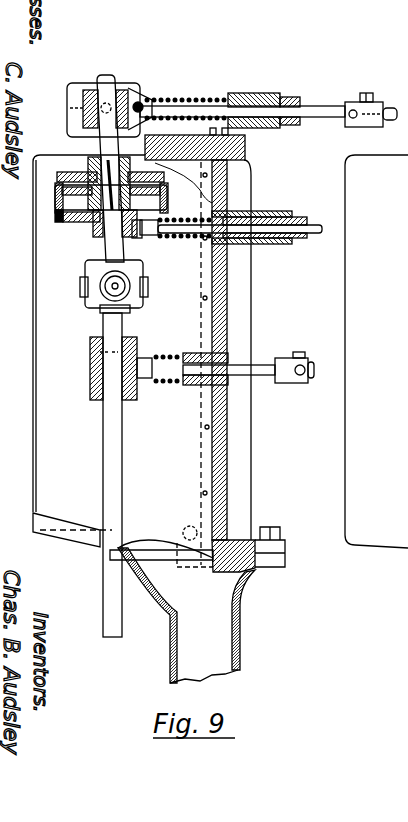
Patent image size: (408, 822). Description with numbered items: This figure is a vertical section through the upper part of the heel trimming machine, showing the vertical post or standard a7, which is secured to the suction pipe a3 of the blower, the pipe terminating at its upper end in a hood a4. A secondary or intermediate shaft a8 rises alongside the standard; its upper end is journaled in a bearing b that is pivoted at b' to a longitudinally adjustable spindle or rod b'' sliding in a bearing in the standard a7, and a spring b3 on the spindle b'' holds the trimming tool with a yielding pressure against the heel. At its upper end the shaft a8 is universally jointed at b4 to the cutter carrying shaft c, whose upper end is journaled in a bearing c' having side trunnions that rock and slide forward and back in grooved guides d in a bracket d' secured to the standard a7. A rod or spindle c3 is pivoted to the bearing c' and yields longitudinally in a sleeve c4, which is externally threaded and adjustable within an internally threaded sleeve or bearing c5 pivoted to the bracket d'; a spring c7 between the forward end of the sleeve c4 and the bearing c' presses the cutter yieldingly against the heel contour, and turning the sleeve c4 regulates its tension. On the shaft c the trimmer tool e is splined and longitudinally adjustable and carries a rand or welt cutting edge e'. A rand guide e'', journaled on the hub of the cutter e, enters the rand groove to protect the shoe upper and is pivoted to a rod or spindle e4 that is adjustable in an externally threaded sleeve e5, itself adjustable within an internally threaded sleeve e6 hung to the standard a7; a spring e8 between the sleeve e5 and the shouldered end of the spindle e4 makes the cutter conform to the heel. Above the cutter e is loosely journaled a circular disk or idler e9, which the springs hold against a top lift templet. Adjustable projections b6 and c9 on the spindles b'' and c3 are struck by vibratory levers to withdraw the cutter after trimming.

The suction pipe a3 is at (186, 615).
The hood a4 is at (123, 361).
The vertical post or standard a7 is at (222, 490).
The secondary or intermediate shaft a8 is at (115, 465).
The bearing b is at (147, 355).
The pivot b' is at (96, 368).
The longitudinally adjustable spindle or rod b'' is at (231, 357).
The spring b3 is at (168, 382).
The universal joint b4 is at (147, 287).
The adjustable projection b6 is at (300, 375).
The cutter carrying shaft c is at (93, 154).
The bearing c' is at (133, 84).
The rod or spindle c3 is at (315, 110).
The sleeve c4 is at (282, 103).
The sleeve or bearing c5 is at (247, 93).
The spring c7 is at (200, 93).
The adjustable projection c9 is at (352, 115).
The grooved guides d is at (91, 110).
The bracket d' is at (156, 93).
The trimmer tool e is at (84, 197).
The rand or welt cutting edge e' is at (32, 223).
The rand guide e'' is at (73, 230).
The rod or spindle e4 is at (310, 225).
The sleeve e5 is at (295, 213).
The internally screw threaded sleeve e6 is at (258, 212).
The spring e8 is at (185, 238).
The circular disk or idler e9 is at (72, 177).